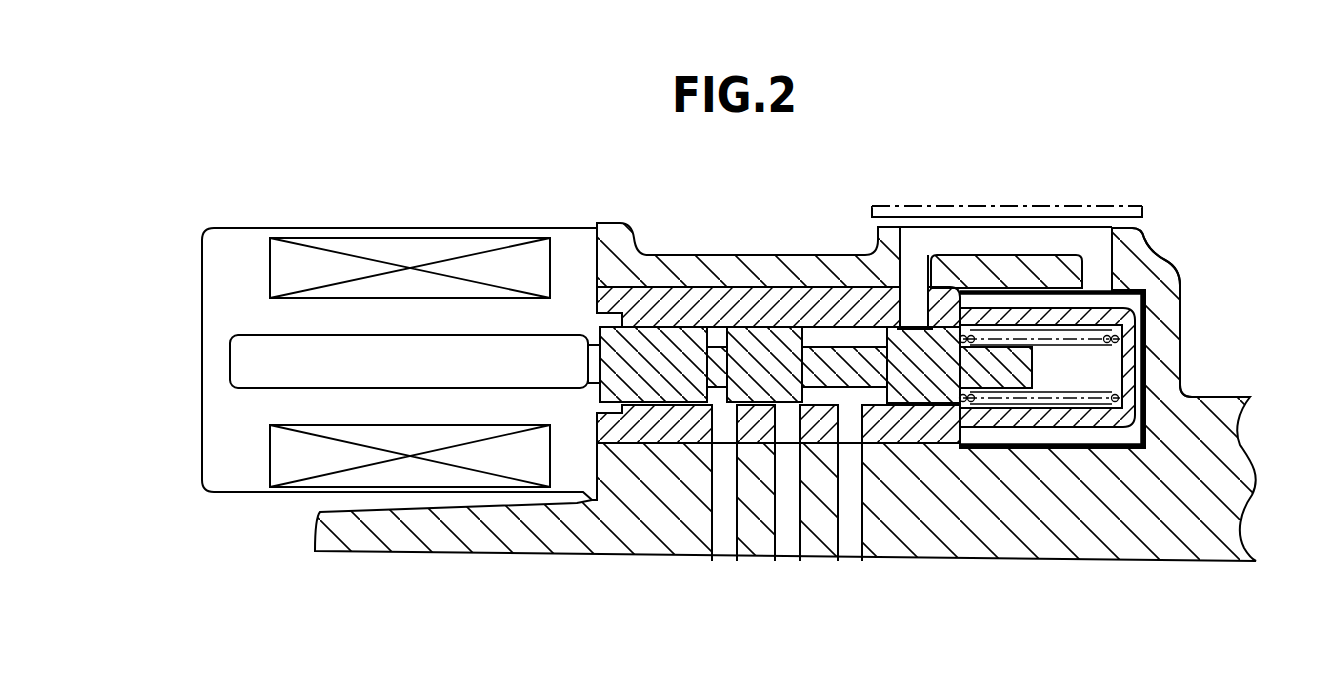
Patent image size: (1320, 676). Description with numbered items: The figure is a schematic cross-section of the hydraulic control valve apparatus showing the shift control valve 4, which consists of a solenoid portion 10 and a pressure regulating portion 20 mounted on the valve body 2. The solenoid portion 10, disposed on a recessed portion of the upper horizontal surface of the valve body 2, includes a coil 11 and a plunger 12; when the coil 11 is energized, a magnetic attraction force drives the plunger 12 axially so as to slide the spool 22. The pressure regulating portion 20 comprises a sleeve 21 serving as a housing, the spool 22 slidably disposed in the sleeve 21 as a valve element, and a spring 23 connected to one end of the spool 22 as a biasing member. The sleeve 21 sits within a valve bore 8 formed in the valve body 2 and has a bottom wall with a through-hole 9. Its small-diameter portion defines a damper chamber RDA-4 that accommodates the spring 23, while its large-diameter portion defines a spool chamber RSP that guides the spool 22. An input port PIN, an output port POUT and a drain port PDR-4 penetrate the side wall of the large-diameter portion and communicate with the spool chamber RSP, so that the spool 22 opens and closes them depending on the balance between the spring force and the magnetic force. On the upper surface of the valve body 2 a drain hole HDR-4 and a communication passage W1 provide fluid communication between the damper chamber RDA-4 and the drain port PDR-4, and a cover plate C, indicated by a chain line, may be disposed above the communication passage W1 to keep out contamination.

The valve body 2 is at (1247, 481).
The shift control valve 4 is at (804, 195).
The valve bore 8 is at (631, 286).
The through-hole 9 is at (1133, 368).
The solenoid portion 10 is at (459, 204).
The coil 11 is at (341, 247).
The plunger 12 is at (237, 361).
The pressure regulating portion 20 is at (1175, 221).
The sleeve 21 is at (676, 296).
The spool 22 is at (758, 340).
The spring 23 is at (1087, 348).
The spool chamber RSP is at (846, 332).
The drain port PDR-4 is at (912, 305).
The drain hole HDR-4 is at (925, 263).
The communication passage W1 is at (1046, 238).
The cover plate C is at (1109, 205).
The damper chamber RDA-4 is at (1075, 370).
The input port PIN is at (772, 423).
The output port POUT is at (858, 424).